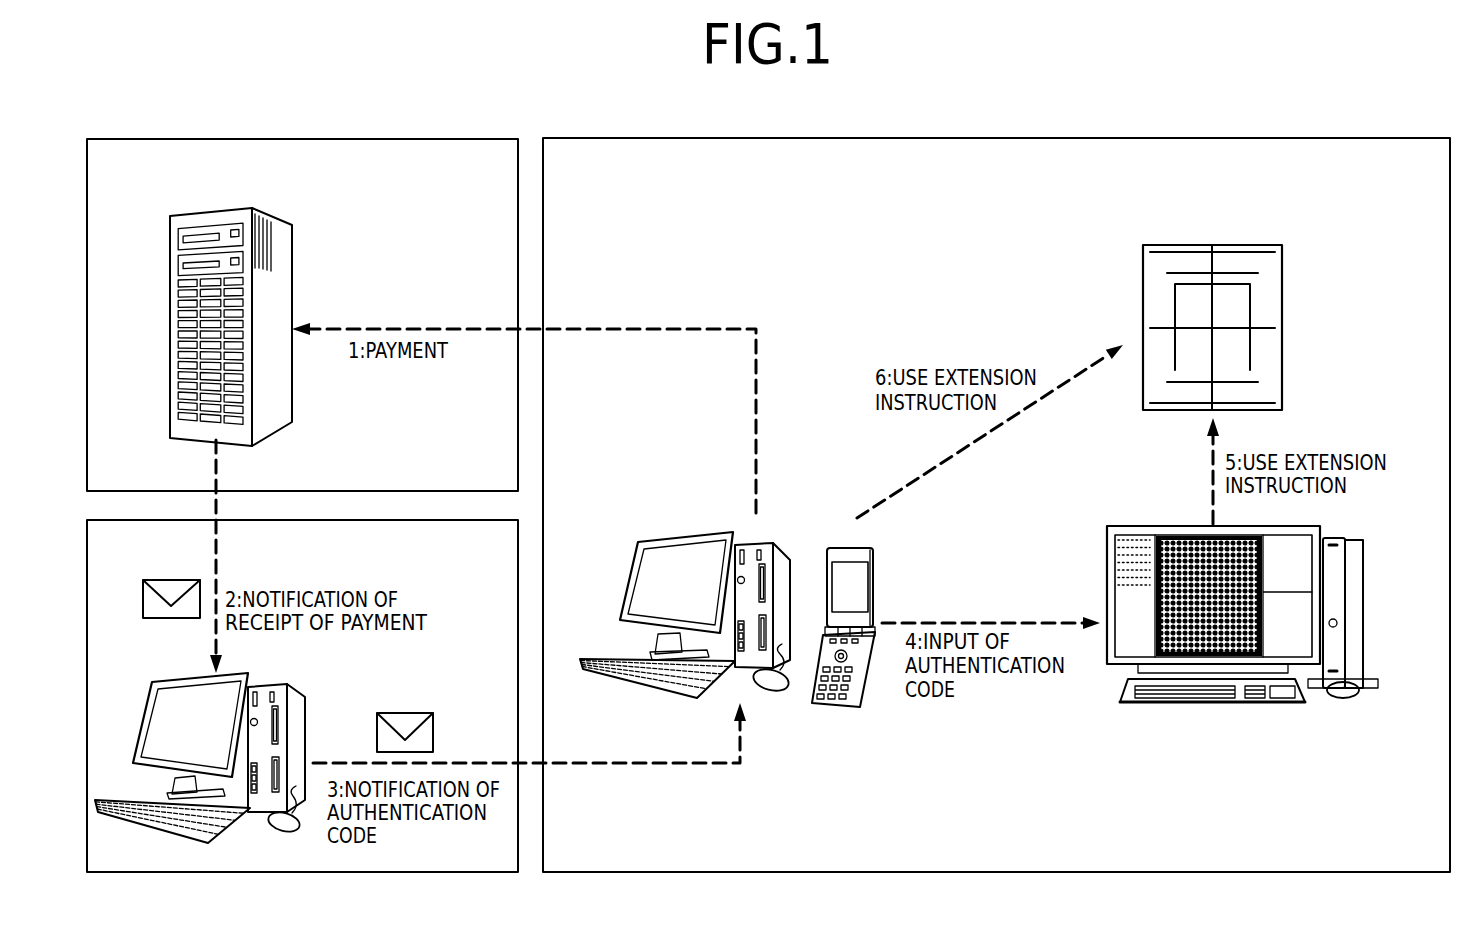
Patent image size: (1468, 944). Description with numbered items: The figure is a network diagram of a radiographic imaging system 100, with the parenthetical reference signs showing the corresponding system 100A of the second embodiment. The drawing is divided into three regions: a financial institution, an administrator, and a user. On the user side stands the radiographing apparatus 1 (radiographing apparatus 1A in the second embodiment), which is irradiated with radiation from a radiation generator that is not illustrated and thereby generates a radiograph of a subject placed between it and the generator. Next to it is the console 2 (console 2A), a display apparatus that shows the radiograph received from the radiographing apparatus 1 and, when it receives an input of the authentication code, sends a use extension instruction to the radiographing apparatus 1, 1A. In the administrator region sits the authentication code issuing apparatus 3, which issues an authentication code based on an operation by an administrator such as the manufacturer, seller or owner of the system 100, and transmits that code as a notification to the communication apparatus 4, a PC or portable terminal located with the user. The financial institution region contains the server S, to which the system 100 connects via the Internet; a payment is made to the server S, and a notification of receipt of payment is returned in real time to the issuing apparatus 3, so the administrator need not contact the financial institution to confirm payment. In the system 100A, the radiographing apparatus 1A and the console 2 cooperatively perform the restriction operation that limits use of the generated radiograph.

The radiographic imaging system 100 is at (768, 454).
The radiographic imaging system 100A is at (893, 114).
The server S is at (280, 218).
The authentication code issuing apparatus 3 is at (293, 692).
The communication apparatus 4 is at (842, 550).
The radiographic imaging apparatus 1 is at (1255, 327).
The radiographic imaging apparatus 1A is at (1280, 297).
The console 2 is at (1230, 587).
The console 2A is at (1133, 528).